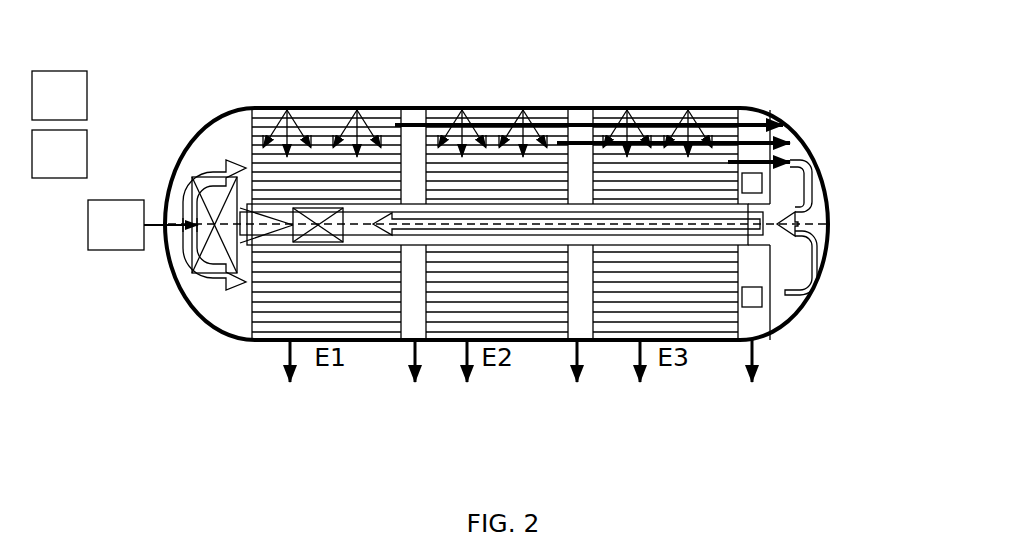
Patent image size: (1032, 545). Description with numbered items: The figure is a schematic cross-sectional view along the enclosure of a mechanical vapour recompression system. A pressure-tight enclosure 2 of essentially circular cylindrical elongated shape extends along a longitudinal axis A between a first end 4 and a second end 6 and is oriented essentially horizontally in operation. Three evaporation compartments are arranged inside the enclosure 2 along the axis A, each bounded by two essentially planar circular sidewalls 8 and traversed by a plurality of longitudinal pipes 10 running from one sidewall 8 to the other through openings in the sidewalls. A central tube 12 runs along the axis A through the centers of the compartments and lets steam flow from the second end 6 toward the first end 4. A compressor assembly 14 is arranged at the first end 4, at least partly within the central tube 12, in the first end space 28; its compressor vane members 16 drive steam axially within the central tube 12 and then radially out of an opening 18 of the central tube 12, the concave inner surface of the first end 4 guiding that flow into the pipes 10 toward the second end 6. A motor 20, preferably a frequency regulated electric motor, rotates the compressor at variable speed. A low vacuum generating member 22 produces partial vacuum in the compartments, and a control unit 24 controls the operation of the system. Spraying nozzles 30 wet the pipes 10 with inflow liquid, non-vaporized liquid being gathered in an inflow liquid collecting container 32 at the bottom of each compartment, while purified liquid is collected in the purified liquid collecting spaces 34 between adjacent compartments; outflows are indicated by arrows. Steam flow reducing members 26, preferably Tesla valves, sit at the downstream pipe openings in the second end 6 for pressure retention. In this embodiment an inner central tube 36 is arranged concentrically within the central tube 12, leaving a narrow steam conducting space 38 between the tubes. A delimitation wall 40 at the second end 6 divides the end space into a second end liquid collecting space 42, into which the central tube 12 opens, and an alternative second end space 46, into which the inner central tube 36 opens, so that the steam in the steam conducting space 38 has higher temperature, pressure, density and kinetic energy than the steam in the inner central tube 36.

The pressure-tight enclosure 2 is at (390, 107).
The first end 4 is at (172, 112).
The second end 6 is at (818, 108).
The sidewall 8 is at (292, 232).
The longitudinal pipe 10 is at (316, 120).
The central tube 12 is at (725, 250).
The compressor assembly 14 is at (150, 258).
The compressor vane members 16 is at (218, 253).
The opening of the central tube 18 is at (293, 225).
The motor 20 is at (143, 225).
The low vacuum generating member 22 is at (59, 95).
The control unit 24 is at (59, 154).
The steam flow reducing member 26 is at (752, 183).
The first end space 28 is at (208, 140).
The spraying nozzle 30 is at (286, 110).
The inflow liquid collecting container 32 is at (277, 345).
The purified liquid collecting space 34 is at (413, 300).
The inner central tube 36 is at (772, 236).
The steam conducting space 38 is at (750, 204).
The delimitation wall 40 is at (770, 285).
The second end liquid collecting space 42 is at (752, 118).
The alternative second end space 46 is at (795, 152).
The longitudinal axis A is at (520, 229).